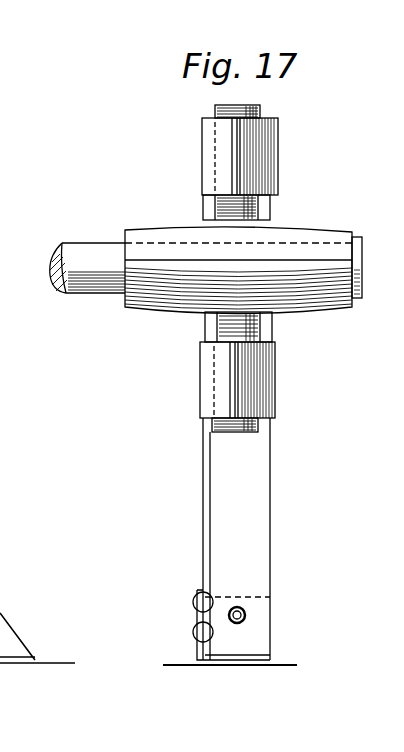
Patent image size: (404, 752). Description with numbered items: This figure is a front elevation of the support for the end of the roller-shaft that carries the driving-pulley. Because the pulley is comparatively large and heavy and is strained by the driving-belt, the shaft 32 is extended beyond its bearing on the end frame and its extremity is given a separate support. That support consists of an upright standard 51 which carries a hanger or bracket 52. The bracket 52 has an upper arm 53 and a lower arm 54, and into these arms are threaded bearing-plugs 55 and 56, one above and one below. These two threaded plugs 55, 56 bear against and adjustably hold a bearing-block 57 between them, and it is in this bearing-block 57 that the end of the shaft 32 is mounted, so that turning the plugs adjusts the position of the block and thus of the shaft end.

The shaft 32 is at (90, 287).
The standard 51 is at (257, 533).
The hanger or bracket 52 is at (203, 207).
The upper arm 53 is at (265, 182).
The lower arm 54 is at (275, 388).
The bearing-plug 55 is at (263, 114).
The bearing-plug 56 is at (218, 432).
The bearing-block 57 is at (153, 307).